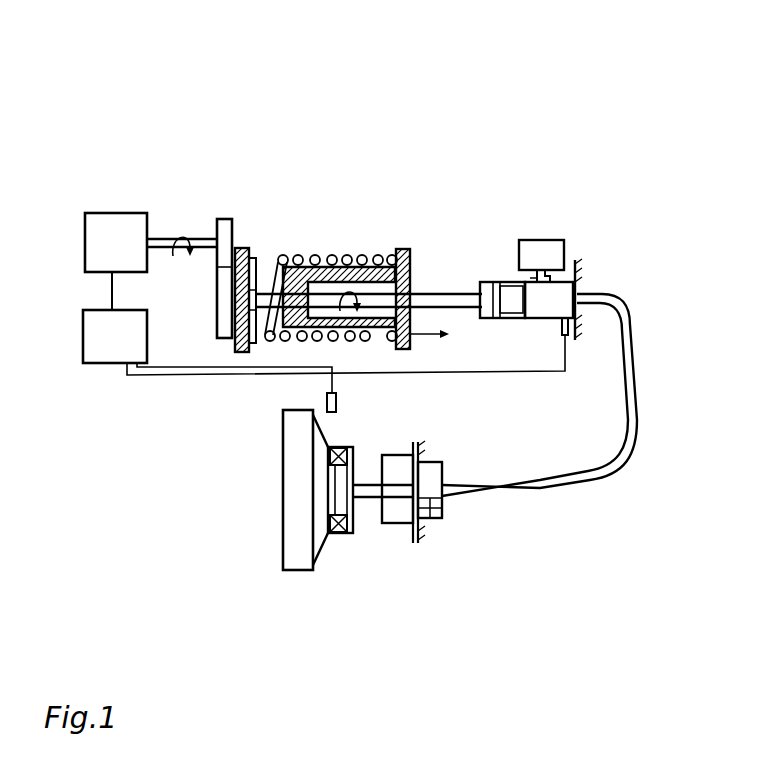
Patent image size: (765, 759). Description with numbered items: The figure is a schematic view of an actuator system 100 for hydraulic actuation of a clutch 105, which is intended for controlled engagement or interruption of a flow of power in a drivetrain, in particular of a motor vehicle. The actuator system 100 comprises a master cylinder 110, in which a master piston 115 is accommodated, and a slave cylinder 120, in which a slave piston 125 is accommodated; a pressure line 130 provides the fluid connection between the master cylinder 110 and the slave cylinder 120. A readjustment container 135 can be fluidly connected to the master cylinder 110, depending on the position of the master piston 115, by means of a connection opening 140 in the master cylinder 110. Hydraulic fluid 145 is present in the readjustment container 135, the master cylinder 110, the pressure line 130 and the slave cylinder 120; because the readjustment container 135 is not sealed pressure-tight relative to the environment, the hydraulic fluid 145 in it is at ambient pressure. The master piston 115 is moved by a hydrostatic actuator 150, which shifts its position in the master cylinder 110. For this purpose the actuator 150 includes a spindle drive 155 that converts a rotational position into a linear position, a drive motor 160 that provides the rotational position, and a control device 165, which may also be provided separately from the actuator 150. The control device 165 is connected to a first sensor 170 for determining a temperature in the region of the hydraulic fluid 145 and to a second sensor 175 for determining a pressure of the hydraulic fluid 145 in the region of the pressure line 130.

The actuator system 100 is at (117, 66).
The clutch 105 is at (313, 586).
The master cylinder 110 is at (490, 320).
The master piston 115 is at (523, 320).
The slave cylinder 120 is at (395, 527).
The slave piston 125 is at (410, 462).
The pressure line 130 is at (620, 300).
The readjustment container 135 is at (532, 238).
The connection opening 140 is at (526, 276).
The hydraulic fluid 145 is at (573, 292).
The hydrostatic actuator 150 is at (247, 151).
The spindle drive 155 is at (324, 305).
The drive motor 160 is at (112, 212).
The control device 165 is at (148, 345).
The first sensor 170 is at (337, 400).
The second sensor 175 is at (568, 343).